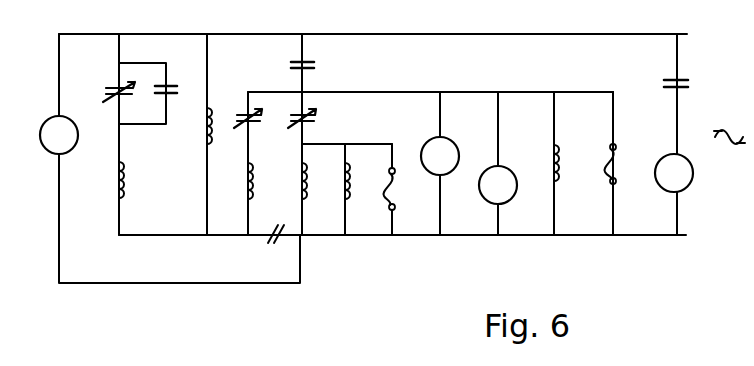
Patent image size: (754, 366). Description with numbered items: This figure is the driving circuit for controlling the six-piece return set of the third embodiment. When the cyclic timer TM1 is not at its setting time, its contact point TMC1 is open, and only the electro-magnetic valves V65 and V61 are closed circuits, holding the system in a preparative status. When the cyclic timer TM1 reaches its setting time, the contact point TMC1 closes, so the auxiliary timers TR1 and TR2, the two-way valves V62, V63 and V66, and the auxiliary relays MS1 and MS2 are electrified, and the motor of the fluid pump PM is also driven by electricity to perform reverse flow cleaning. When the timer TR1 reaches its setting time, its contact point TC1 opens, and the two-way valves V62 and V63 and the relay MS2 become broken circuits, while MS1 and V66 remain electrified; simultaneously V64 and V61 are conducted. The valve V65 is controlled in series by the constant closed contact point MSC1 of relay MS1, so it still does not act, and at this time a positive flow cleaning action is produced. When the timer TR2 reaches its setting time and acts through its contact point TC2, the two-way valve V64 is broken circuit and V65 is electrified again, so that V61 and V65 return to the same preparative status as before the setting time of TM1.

The cyclic timer TM1 is at (59, 135).
The constant closed contact point of MS1 MSC1 is at (400, 85).
The contact point of timer TR2 TC2 is at (208, 102).
The contact point of cyclic timer TM1 TMC1 is at (324, 57).
The contact point of timer TR1 TC1 is at (315, 113).
The electro-magnetic valve V61 is at (193, 126).
The electro-magnetic valve V65 is at (100, 180).
The two-way valve V64 is at (233, 181).
The two-way valve V62 is at (286, 181).
The two-way valve V63 is at (333, 181).
The auxiliary relay MS2 is at (402, 189).
The auxiliary timer TR2 is at (440, 156).
The auxiliary timer TR1 is at (498, 185).
The two-way valve V66 is at (540, 163).
The auxiliary relay MS1 is at (625, 163).
The motor of fluid pump PM is at (674, 173).